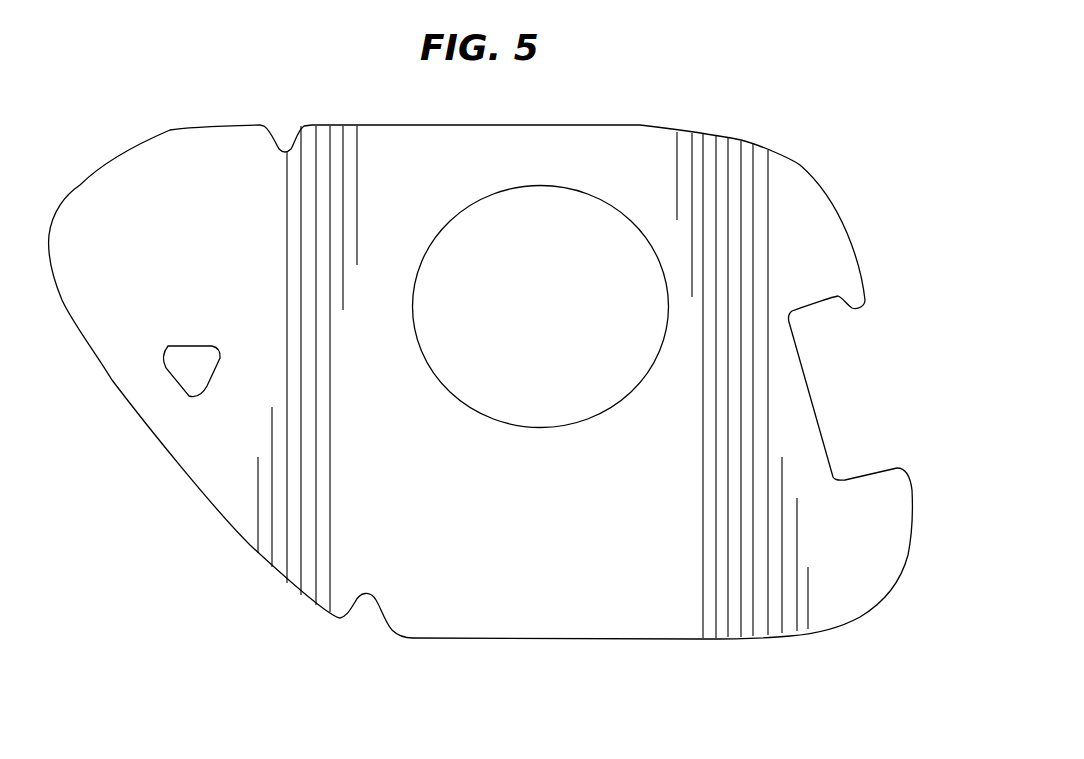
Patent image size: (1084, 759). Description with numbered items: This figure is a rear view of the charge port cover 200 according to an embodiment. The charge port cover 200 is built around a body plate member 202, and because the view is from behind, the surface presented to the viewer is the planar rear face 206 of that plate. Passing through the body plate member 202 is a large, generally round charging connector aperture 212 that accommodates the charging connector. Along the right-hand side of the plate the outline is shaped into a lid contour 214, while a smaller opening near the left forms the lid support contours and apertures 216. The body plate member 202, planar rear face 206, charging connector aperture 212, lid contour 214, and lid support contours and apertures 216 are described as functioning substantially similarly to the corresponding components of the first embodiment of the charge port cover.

The charge port cover 200 is at (216, 600).
The body plate member 202 is at (203, 150).
The planar rear face 206 is at (450, 602).
The charging connector aperture 212 is at (552, 428).
The lid contour 214 is at (797, 350).
The lid support contours and apertures 216 is at (168, 376).